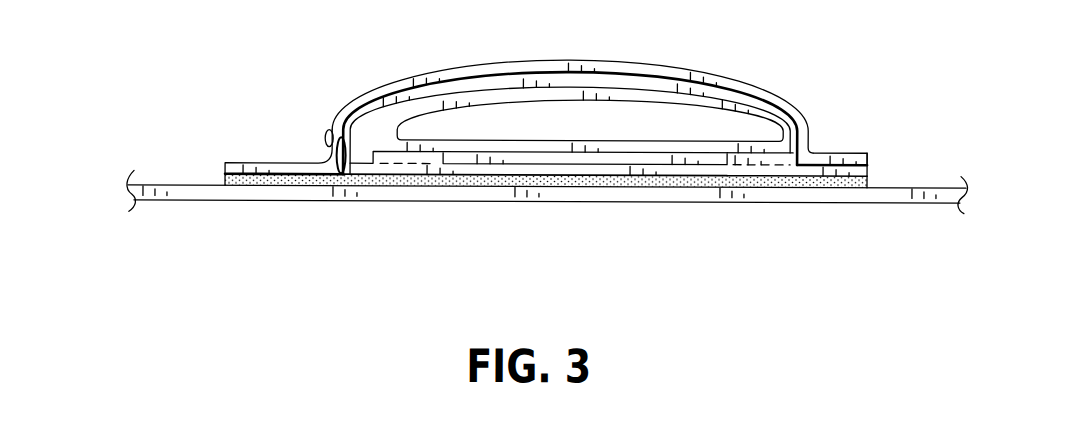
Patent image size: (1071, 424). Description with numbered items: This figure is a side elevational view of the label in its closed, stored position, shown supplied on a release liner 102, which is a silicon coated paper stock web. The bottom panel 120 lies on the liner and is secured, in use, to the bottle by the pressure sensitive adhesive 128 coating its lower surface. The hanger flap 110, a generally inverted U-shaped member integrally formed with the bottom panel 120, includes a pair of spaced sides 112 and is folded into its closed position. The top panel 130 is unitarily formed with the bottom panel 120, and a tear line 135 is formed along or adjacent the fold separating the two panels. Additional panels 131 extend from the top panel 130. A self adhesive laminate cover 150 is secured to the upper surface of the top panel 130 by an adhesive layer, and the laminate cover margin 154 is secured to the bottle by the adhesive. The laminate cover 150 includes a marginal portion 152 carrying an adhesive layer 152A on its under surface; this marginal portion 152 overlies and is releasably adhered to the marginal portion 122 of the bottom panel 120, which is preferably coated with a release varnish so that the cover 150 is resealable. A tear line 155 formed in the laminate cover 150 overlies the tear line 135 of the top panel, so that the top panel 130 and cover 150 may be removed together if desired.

The release liner 102 is at (178, 192).
The pressure sensitive adhesive 128 is at (288, 181).
The laminate cover margin 154 is at (273, 168).
The tear line 155 is at (330, 132).
The tear line 135 is at (342, 138).
The laminate cover 150 is at (606, 68).
The top panel 130 is at (567, 78).
The additional panels 131 is at (473, 100).
The hanger flap 110 is at (723, 144).
The sides 112 is at (403, 158).
The bottom panel 120 is at (582, 175).
The marginal portion 122 is at (847, 169).
The marginal portion 152 is at (833, 156).
The adhesive layer 152A is at (868, 166).